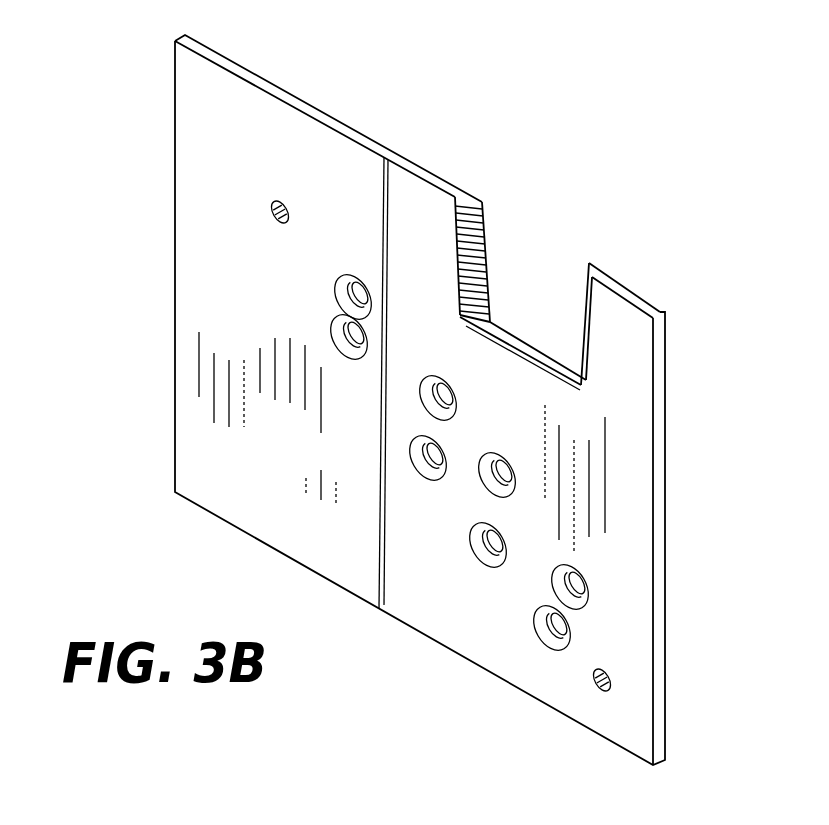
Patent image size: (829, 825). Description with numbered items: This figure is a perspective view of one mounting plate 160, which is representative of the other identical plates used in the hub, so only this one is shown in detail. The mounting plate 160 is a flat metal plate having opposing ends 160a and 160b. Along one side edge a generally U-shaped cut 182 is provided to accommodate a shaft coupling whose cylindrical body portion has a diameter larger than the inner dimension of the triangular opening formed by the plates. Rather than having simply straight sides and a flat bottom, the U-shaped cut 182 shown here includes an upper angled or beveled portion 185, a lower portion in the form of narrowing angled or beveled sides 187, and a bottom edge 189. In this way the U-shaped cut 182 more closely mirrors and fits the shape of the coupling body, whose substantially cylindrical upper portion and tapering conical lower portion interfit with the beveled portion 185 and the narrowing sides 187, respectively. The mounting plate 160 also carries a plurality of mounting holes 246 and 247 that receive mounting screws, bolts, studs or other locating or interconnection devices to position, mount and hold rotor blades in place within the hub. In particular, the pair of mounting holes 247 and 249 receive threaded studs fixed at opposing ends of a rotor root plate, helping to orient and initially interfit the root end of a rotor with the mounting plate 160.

The mounting plate 160 is at (287, 422).
The opposing end 160a is at (178, 238).
The opposing end 160b is at (662, 580).
The U-shaped cut 182 is at (527, 276).
The upper angled or beveled portion 185 is at (473, 232).
The narrowing angled or beveled sides 187 is at (473, 300).
The bottom edge 189 is at (522, 348).
The mounting holes 246 is at (443, 413).
The mounting hole 247 is at (272, 217).
The mounting hole 249 is at (592, 679).